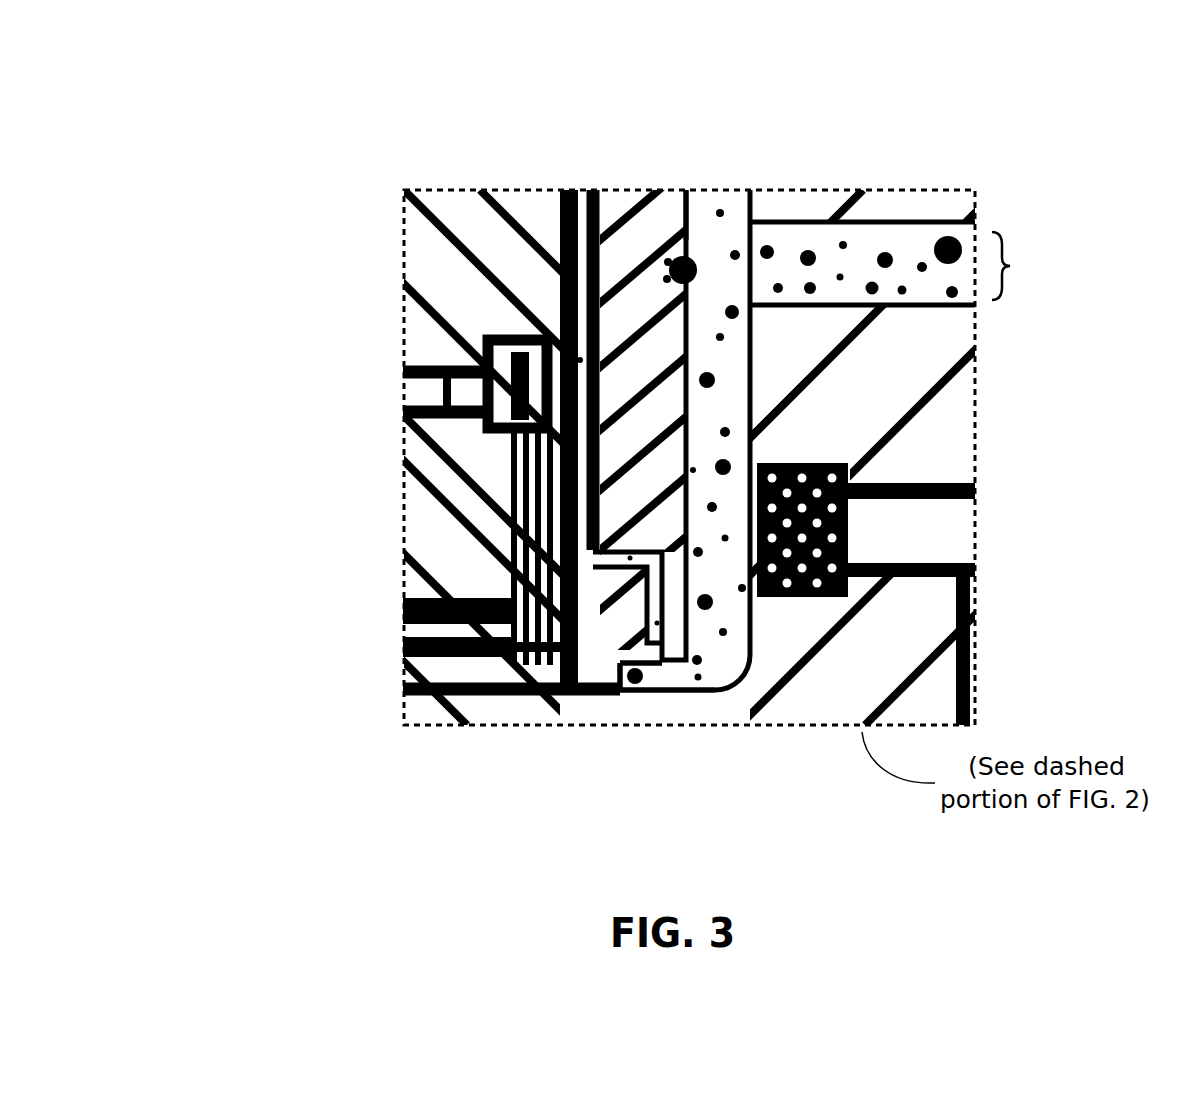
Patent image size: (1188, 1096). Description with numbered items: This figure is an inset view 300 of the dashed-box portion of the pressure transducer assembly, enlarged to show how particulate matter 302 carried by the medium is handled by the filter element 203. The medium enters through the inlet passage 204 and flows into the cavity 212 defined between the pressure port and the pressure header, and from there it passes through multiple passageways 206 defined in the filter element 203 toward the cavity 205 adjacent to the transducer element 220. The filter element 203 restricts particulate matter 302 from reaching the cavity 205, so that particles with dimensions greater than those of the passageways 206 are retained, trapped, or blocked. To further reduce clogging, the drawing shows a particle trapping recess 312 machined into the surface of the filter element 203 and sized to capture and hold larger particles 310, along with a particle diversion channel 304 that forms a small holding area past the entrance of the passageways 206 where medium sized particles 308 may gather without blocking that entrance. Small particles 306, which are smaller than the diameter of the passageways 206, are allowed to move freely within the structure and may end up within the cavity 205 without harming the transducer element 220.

The inset view 300 is at (665, 72).
The cavity 205 is at (576, 195).
The filter element 203 is at (666, 195).
The larger particles 310 is at (695, 252).
The cavity 212 is at (733, 213).
The inlet passage 204 is at (898, 243).
The particulate matter 302 is at (1034, 266).
The particle trapping recess 312 is at (674, 286).
The transducer element 220 is at (523, 365).
The small particles 306 is at (657, 623).
The medium sized particles 308 is at (624, 696).
The particle diversion channel 304 is at (663, 677).
The passageways 206 is at (663, 613).